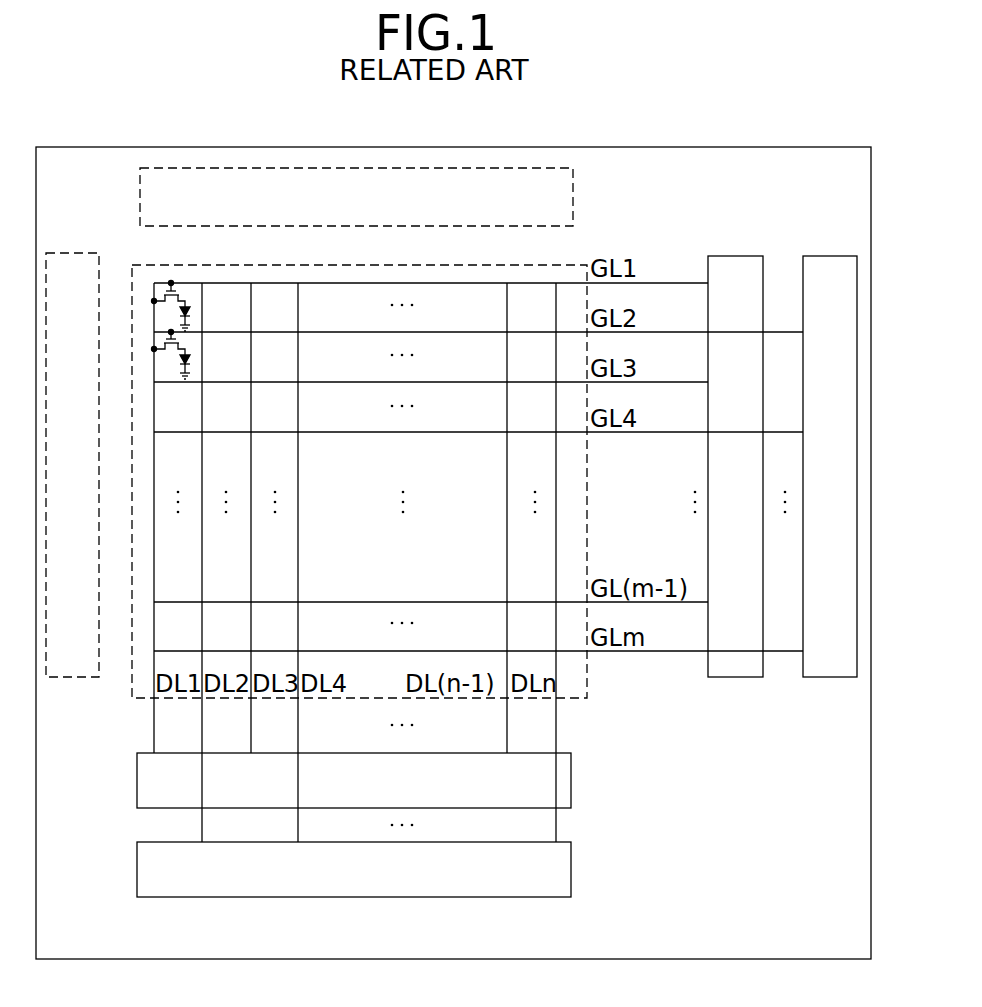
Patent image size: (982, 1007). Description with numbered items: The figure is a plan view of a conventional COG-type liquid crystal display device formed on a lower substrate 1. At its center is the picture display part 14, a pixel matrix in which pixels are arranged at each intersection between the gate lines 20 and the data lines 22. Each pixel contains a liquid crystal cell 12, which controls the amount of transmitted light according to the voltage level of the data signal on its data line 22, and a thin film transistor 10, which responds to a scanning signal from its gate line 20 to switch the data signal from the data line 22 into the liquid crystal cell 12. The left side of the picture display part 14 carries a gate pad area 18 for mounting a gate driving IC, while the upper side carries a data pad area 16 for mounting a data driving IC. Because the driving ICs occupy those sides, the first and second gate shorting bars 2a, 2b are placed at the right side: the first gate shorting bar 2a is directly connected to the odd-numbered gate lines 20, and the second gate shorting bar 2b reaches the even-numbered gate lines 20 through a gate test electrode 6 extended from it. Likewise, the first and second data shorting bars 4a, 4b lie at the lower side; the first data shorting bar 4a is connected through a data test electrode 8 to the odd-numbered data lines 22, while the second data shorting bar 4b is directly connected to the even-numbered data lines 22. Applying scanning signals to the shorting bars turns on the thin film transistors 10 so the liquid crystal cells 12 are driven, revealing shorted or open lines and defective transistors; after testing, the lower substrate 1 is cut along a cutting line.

The lower substrate 1 is at (676, 147).
The first gate shorting bar 2a is at (736, 677).
The second gate shorting bar 2b is at (830, 677).
The first data shorting bar 4a is at (571, 780).
The second data shorting bar 4b is at (571, 870).
The gate test electrode 6 is at (650, 283).
The data test electrode 8 is at (556, 725).
The thin film transistor 10 is at (186, 293).
The liquid crystal cell 12 is at (190, 363).
The picture display part 14 is at (572, 265).
The data pad area 16 is at (364, 210).
The gate pad area 18 is at (59, 498).
The gate line 20 is at (171, 282).
The data line 22 is at (154, 318).